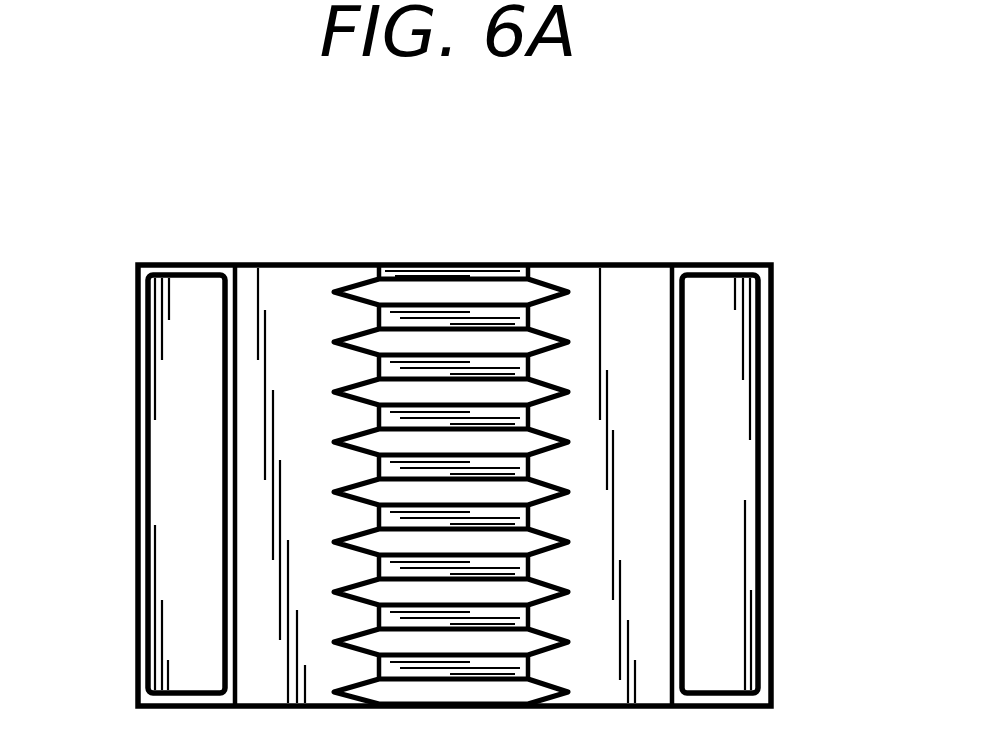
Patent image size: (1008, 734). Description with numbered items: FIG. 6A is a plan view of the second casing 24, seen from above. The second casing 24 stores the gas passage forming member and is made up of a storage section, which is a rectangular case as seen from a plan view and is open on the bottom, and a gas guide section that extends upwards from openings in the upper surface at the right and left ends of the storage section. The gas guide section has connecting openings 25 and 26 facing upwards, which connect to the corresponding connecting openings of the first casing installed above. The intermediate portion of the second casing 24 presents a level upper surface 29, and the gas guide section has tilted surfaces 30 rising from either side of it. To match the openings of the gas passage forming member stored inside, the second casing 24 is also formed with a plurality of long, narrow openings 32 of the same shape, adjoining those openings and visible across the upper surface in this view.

The second casing 24 is at (563, 266).
The connecting opening 25 is at (168, 457).
The connecting opening 26 is at (727, 470).
The level upper surface 29 is at (410, 318).
The tilted surface 30 is at (615, 297).
The long, narrow openings 32 is at (456, 293).